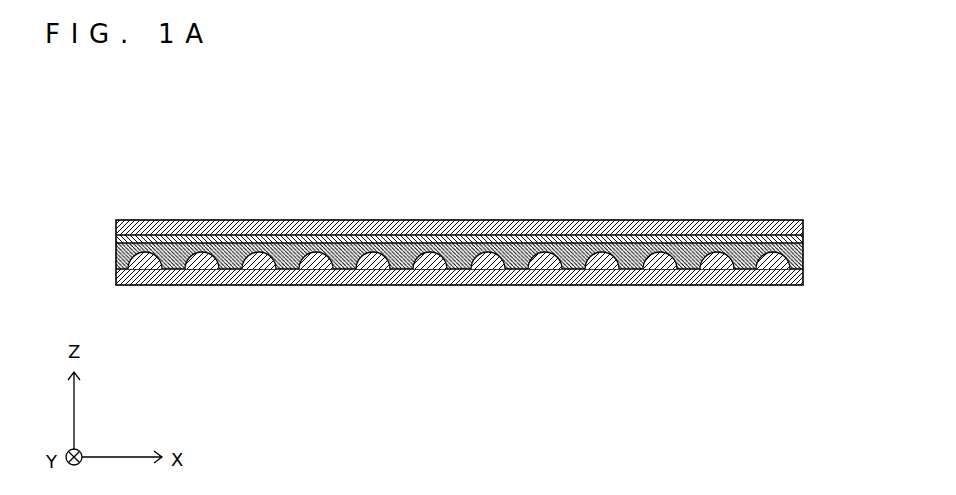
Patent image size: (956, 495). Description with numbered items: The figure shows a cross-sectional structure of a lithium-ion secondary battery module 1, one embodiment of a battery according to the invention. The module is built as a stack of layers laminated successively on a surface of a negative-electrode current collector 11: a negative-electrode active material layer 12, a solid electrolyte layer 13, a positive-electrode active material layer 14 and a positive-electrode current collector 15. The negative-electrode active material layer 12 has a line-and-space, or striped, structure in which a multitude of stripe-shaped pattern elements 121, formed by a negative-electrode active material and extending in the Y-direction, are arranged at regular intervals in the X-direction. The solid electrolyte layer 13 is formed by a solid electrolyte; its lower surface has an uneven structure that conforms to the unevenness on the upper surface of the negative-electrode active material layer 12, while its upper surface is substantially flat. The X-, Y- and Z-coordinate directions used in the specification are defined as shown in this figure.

The lithium-ion secondary battery module 1 is at (269, 183).
The negative-electrode current collector 11 is at (330, 275).
The negative-electrode active material layer 12 is at (673, 260).
The stripe-shaped pattern elements 121 is at (459, 211).
The solid electrolyte layer 13 is at (116, 254).
The positive-electrode active material layer 14 is at (116, 239).
The positive-electrode current collector 15 is at (480, 230).